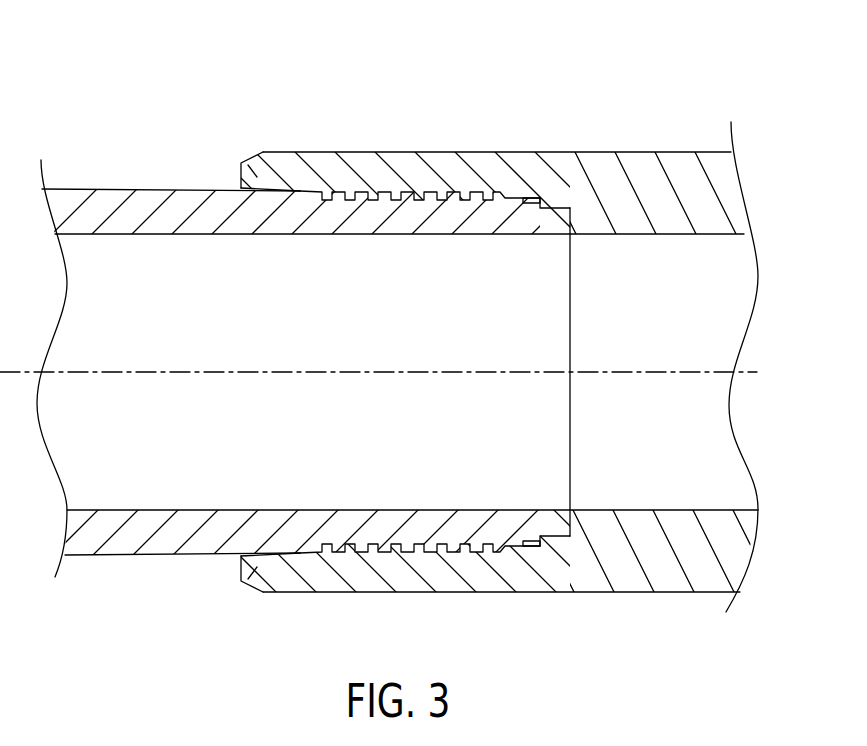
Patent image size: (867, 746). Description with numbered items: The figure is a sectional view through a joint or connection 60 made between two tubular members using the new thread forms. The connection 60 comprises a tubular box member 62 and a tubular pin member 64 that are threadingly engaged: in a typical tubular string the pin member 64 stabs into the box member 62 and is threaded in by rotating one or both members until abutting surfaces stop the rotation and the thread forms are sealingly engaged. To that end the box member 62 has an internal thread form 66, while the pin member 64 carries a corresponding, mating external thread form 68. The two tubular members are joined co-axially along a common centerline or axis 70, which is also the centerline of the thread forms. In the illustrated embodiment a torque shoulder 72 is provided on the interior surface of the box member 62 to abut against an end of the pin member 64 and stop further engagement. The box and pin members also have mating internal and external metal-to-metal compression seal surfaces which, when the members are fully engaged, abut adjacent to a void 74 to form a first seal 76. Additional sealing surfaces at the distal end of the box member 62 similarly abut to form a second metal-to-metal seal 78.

The joint or connection 60 is at (393, 356).
The tubular box member 62 is at (352, 174).
The tubular pin member 64 is at (323, 446).
The internal thread form 66 is at (471, 192).
The external thread form 68 is at (330, 200).
The centerline or axis 70 is at (714, 372).
The torque shoulder 72 is at (570, 210).
The void 74 is at (540, 200).
The first seal 76 is at (552, 542).
The second metal-to-metal seal 78 is at (243, 160).